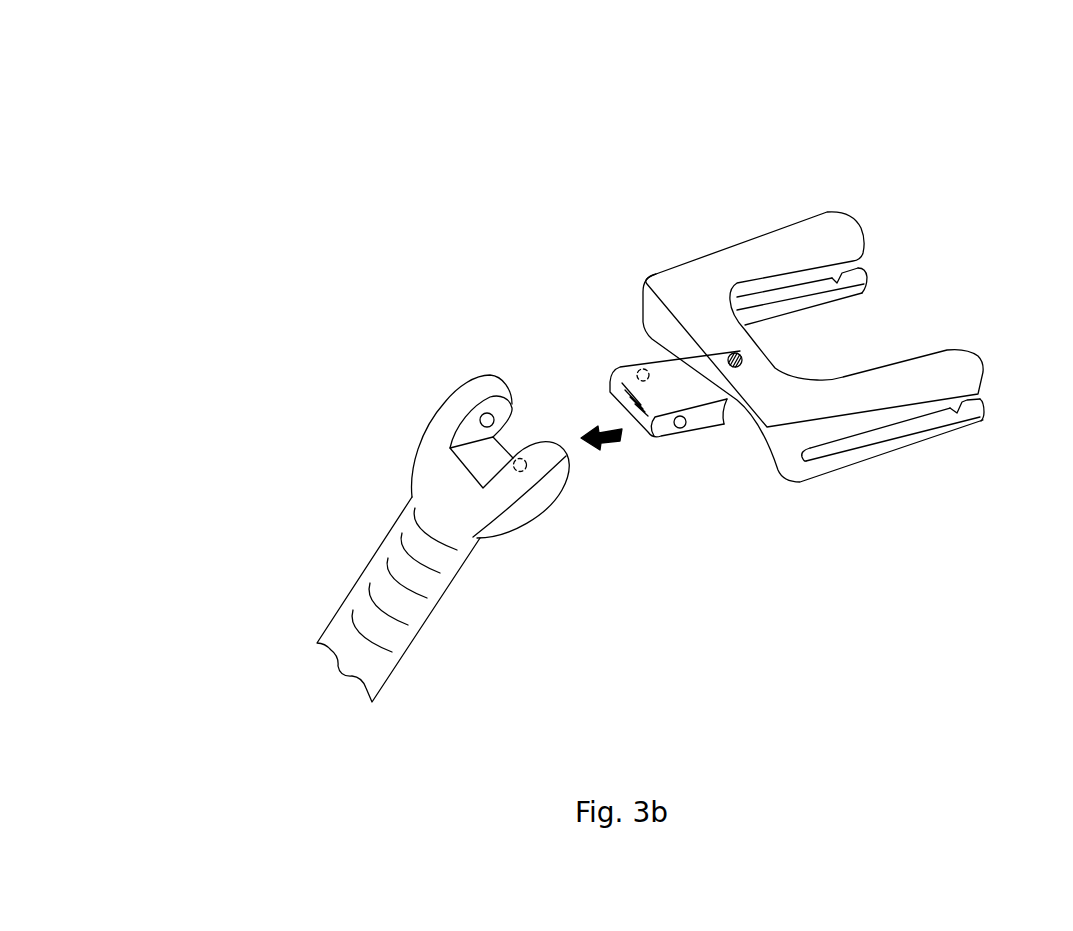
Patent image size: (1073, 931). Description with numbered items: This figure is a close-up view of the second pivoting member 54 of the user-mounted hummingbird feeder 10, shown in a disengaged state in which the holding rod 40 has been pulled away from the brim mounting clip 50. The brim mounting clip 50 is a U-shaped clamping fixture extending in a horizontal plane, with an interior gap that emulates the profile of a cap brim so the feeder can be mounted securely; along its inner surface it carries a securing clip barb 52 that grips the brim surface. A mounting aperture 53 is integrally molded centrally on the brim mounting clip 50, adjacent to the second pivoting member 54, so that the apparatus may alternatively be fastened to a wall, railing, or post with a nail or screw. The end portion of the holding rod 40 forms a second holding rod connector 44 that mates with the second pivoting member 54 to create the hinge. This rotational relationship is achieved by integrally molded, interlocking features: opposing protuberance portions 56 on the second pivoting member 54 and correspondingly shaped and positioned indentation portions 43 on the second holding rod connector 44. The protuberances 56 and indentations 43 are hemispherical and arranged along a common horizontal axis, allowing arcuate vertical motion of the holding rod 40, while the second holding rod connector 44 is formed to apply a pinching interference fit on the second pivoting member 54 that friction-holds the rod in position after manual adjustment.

The user-mounted hummingbird feeder 10 is at (158, 134).
The holding rod 40 is at (352, 583).
The indentation portions 43 is at (520, 472).
The second holding rod connector 44 is at (547, 452).
The brim mounting clip 50 is at (847, 397).
The securing clip barb 52 is at (845, 272).
The mounting aperture 53 is at (741, 368).
The second pivoting member 54 is at (618, 370).
The protuberance portions 56 is at (647, 382).